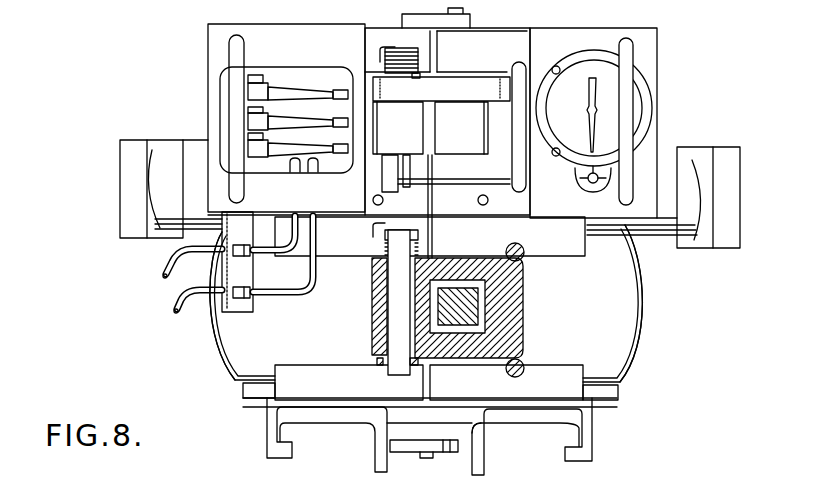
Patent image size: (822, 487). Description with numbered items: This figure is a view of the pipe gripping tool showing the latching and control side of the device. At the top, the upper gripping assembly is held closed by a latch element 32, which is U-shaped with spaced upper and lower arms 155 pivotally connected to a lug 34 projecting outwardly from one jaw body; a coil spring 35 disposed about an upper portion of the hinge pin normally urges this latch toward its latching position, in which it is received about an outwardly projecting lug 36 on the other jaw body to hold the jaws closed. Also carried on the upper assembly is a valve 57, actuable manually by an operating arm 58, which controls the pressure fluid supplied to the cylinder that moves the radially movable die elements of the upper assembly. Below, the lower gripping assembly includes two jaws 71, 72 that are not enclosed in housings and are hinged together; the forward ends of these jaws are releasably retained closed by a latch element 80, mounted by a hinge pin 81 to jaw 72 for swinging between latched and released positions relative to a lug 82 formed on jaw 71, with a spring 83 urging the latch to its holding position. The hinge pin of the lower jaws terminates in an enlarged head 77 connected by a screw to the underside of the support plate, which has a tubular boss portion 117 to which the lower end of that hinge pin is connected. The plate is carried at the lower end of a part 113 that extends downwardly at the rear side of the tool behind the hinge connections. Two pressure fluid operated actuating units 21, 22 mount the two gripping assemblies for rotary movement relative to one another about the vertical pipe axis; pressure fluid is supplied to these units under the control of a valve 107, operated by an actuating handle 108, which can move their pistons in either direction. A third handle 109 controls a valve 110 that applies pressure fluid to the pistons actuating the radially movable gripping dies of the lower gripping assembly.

The pressure fluid operated actuating unit 21 is at (670, 254).
The pressure fluid operated actuating unit 22 is at (133, 248).
The latch element 32 is at (468, 83).
The lug 34 is at (412, 139).
The coil spring 35 is at (393, 50).
The lug 36 is at (476, 139).
The valve 57 is at (254, 83).
The operating arm 58 is at (307, 90).
The jaw 71 is at (620, 371).
The jaw 72 is at (243, 337).
The enlarged head 77 is at (407, 445).
The latch element 80 is at (518, 288).
The hinge pin 81 is at (398, 303).
The lug 82 is at (473, 324).
The spring 83 is at (418, 241).
The valve 107 is at (254, 158).
The actuating handle 108 is at (321, 157).
The third handle 109 is at (302, 108).
The valve 110 is at (254, 108).
The part 113 is at (620, 426).
The tubular boss portion 117 is at (460, 431).
The upper and lower arms 155 is at (430, 90).